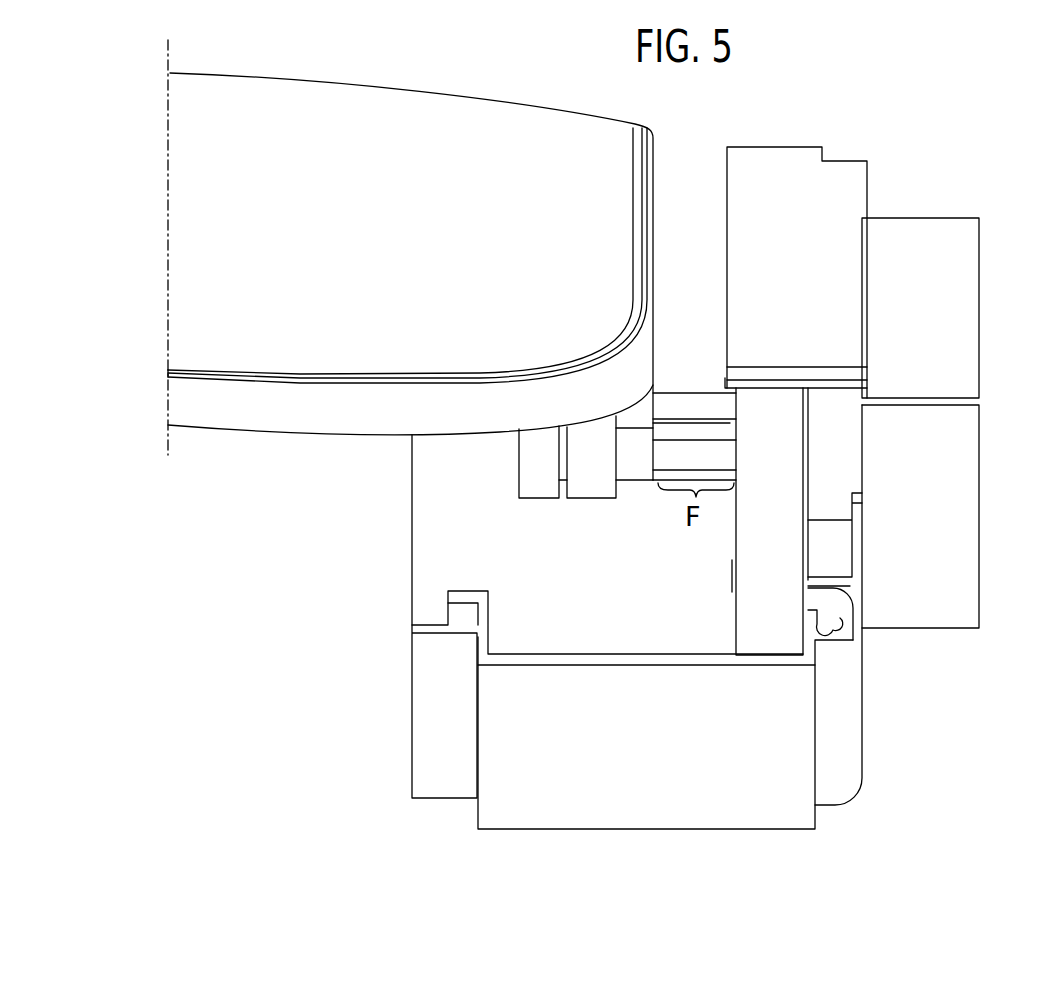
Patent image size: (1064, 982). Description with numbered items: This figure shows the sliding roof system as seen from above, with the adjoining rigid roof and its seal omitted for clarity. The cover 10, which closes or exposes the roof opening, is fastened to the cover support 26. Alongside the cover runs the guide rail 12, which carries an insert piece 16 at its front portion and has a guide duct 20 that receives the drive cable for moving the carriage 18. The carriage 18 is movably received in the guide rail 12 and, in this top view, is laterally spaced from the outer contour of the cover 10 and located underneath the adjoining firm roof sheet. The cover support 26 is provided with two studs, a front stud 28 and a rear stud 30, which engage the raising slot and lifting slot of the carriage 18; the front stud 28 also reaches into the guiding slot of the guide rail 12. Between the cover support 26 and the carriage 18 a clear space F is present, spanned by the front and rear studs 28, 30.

The cover 10 is at (218, 283).
The guide rail 12 is at (952, 312).
The insert piece 16 is at (847, 477).
The carriage 18 is at (760, 610).
The guide duct 20 is at (858, 625).
The cover support 26 is at (537, 477).
The front stud 28 is at (660, 457).
The rear stud 30 is at (672, 411).